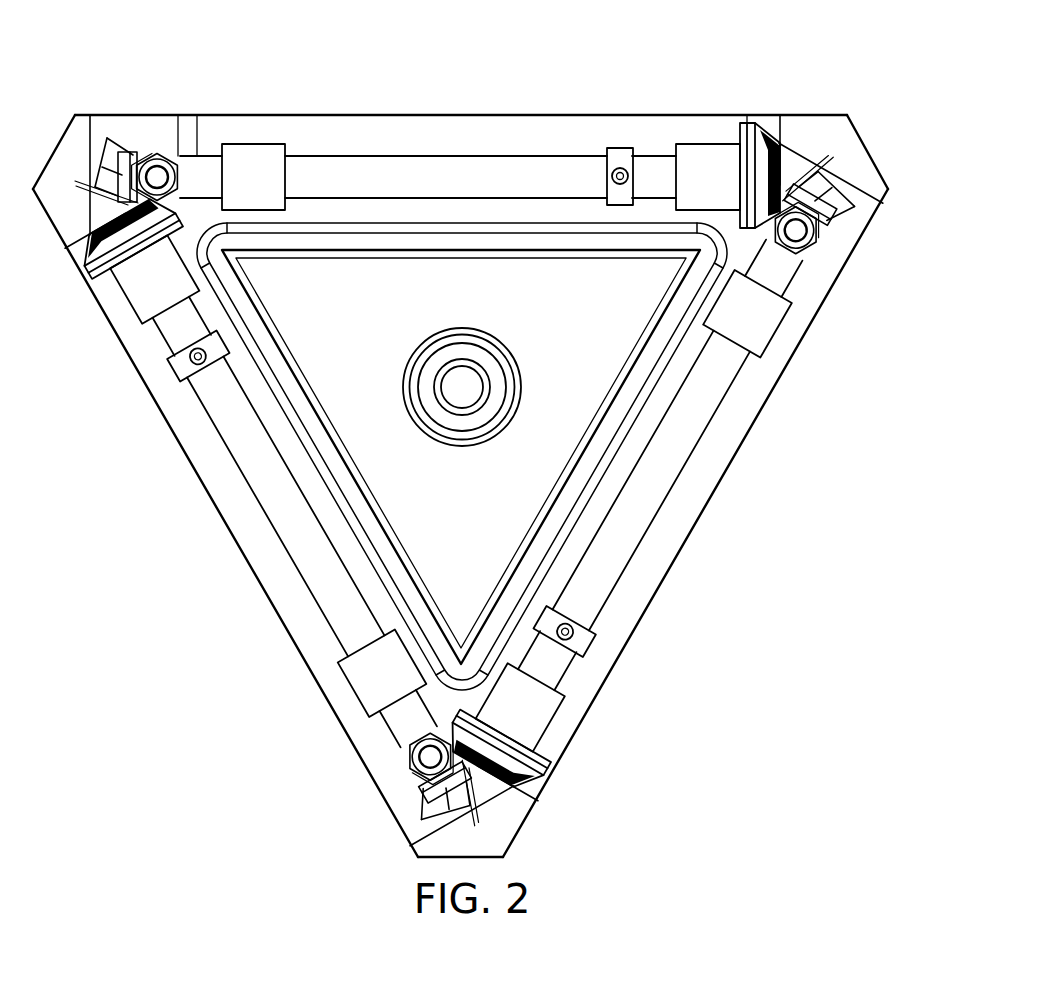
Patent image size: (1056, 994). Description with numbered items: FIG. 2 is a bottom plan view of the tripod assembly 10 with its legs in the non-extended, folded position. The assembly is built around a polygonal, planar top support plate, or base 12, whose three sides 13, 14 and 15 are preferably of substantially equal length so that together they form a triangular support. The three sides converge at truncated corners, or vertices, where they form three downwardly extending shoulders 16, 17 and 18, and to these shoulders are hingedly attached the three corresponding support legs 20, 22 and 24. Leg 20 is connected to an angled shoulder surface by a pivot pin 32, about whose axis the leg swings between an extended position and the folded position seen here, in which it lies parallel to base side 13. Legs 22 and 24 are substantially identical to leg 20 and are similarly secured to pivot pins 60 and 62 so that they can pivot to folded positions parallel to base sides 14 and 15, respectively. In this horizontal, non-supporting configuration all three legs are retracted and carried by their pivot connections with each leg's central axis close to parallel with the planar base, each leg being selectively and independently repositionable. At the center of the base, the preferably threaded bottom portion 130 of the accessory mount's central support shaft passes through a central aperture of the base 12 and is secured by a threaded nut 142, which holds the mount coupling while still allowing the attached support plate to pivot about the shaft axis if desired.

The tripod assembly 10 is at (968, 118).
The base 12 is at (710, 519).
The side 13 is at (185, 455).
The side 14 is at (500, 112).
The side 15 is at (680, 566).
The shoulder 16 is at (423, 830).
The shoulder 17 is at (124, 128).
The shoulder 18 is at (849, 146).
The support leg 20 is at (258, 487).
The support leg 22 is at (385, 152).
The support leg 24 is at (704, 430).
The pivot pin 32 is at (430, 755).
The pivot pin 60 is at (160, 178).
The pivot pin 62 is at (798, 228).
The lower section of support shaft 130 is at (462, 387).
The threaded nut 142 is at (466, 422).